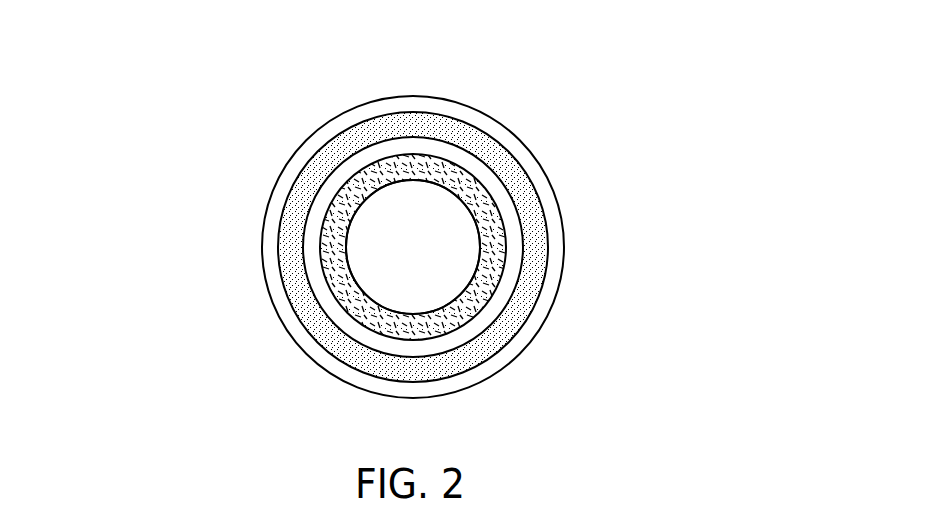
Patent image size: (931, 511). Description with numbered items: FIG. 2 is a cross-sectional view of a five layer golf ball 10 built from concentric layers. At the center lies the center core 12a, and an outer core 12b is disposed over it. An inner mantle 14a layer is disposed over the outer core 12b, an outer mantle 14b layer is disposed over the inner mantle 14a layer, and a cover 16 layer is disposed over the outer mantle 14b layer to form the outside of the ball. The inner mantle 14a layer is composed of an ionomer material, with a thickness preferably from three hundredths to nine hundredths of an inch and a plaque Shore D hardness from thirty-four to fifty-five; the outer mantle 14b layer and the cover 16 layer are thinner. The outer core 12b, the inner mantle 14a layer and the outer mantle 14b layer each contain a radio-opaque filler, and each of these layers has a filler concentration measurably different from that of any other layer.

The golf ball 10 is at (526, 93).
The cover layer 16 is at (548, 178).
The outer mantle layer 14b is at (312, 173).
The inner mantle layer 14a is at (303, 250).
The outer core 12b is at (377, 315).
The center core 12a is at (472, 242).